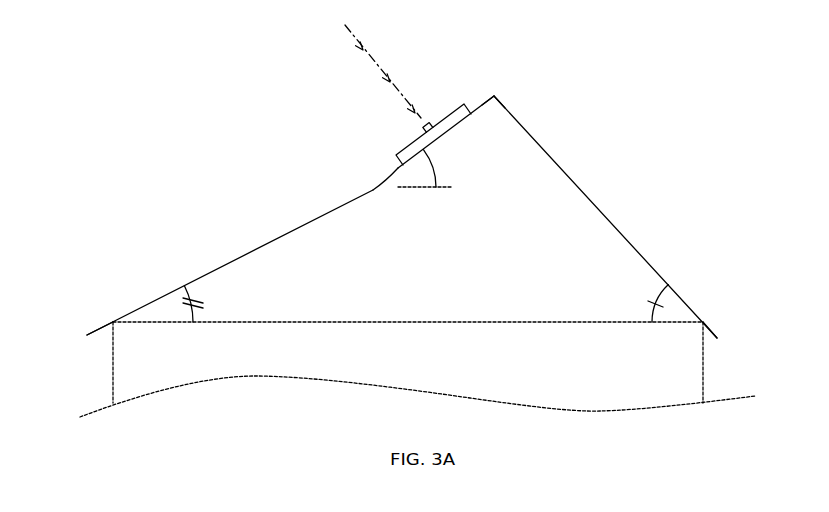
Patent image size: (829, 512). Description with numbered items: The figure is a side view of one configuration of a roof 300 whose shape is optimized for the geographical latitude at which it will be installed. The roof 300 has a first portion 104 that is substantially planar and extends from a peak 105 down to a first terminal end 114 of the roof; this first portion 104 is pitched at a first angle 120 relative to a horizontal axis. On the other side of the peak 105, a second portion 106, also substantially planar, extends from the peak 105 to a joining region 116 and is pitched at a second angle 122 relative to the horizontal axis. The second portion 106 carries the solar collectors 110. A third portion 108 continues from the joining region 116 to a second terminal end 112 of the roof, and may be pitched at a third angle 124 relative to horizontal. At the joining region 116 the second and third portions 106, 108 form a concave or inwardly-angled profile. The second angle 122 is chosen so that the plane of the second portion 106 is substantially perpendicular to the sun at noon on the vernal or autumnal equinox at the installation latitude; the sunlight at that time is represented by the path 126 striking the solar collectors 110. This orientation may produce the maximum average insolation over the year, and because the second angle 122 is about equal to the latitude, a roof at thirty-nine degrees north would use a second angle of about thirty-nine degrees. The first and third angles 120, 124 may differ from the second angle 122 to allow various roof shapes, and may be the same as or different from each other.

The roof 300 is at (402, 208).
The first portion 104 is at (577, 184).
The peak 105 is at (497, 95).
The second portion 106 is at (485, 97).
The third portion 108 is at (300, 224).
The solar collectors 110 is at (398, 156).
The second terminal end 112 is at (83, 309).
The first terminal end 114 is at (723, 302).
The joining region 116 is at (365, 181).
The first angle 120 is at (651, 318).
The second angle 122 is at (437, 184).
The third angle 124 is at (196, 316).
The path 126 is at (347, 28).